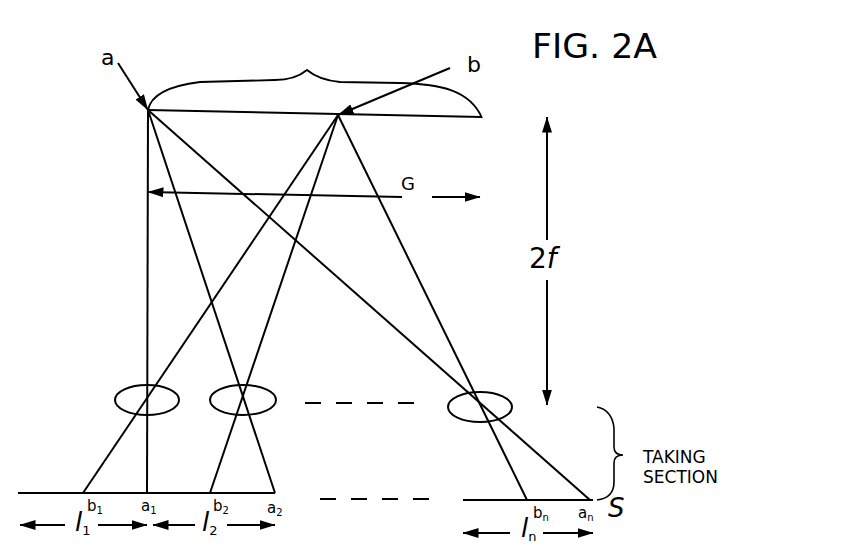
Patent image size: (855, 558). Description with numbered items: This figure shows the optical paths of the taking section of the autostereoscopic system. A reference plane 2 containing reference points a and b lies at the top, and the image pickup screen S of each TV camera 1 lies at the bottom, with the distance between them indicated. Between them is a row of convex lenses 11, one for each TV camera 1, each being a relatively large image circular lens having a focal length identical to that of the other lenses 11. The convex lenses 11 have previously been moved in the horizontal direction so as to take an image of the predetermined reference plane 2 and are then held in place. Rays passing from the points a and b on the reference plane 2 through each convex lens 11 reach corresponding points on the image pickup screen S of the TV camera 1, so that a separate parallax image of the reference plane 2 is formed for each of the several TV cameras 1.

The TV camera 1 is at (622, 535).
The reference plane 2 is at (315, 75).
The convex lens 11 is at (132, 382).